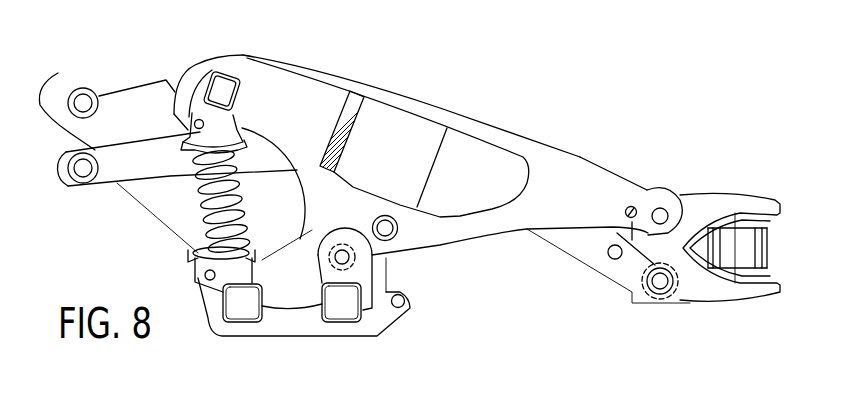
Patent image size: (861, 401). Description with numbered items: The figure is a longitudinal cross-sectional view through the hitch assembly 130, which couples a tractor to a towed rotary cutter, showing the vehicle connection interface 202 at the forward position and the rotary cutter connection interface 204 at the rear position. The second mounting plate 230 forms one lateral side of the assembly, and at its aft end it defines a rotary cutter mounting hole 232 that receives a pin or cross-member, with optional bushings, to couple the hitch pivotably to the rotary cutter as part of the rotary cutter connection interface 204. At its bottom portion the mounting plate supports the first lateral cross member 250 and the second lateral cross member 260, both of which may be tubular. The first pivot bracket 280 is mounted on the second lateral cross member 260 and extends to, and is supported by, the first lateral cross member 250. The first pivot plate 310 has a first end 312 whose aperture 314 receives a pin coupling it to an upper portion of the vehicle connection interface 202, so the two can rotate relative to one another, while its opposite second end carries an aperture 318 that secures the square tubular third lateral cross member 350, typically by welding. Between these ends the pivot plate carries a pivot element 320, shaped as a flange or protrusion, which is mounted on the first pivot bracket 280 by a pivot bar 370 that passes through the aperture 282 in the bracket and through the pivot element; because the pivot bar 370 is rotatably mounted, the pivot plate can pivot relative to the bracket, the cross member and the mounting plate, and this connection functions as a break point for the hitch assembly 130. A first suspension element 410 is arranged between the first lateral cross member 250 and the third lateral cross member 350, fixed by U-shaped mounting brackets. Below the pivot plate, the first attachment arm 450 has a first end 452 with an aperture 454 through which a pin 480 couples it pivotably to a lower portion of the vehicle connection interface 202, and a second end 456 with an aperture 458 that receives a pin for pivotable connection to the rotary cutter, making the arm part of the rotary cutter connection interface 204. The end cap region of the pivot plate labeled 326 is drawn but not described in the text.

The hitch assembly 130 is at (481, 76).
The vehicle connection interface 202 is at (732, 192).
The rotary cutter connection interface 204 is at (60, 82).
The second mounting plate 230 is at (133, 95).
The rotary cutter mounting hole 232 is at (73, 107).
The first lateral cross member 250 is at (243, 310).
The second lateral cross member 260 is at (339, 310).
The first pivot bracket 280 is at (284, 290).
The aperture 282 is at (342, 250).
The first pivot plate 310 is at (509, 140).
The first end 312 is at (599, 184).
The aperture 314 is at (659, 205).
The aperture 318 is at (243, 92).
The pivot element 320 is at (428, 234).
The arm end cap 326 is at (253, 63).
The third lateral cross member 350 is at (223, 87).
The pivot bar 370 is at (335, 257).
The first suspension element 410 is at (205, 200).
The first attachment arm 450 is at (578, 238).
The first end 452 is at (628, 262).
The aperture 454 is at (651, 282).
The second end 456 is at (104, 178).
The aperture 458 is at (78, 178).
The pin 480 is at (659, 282).